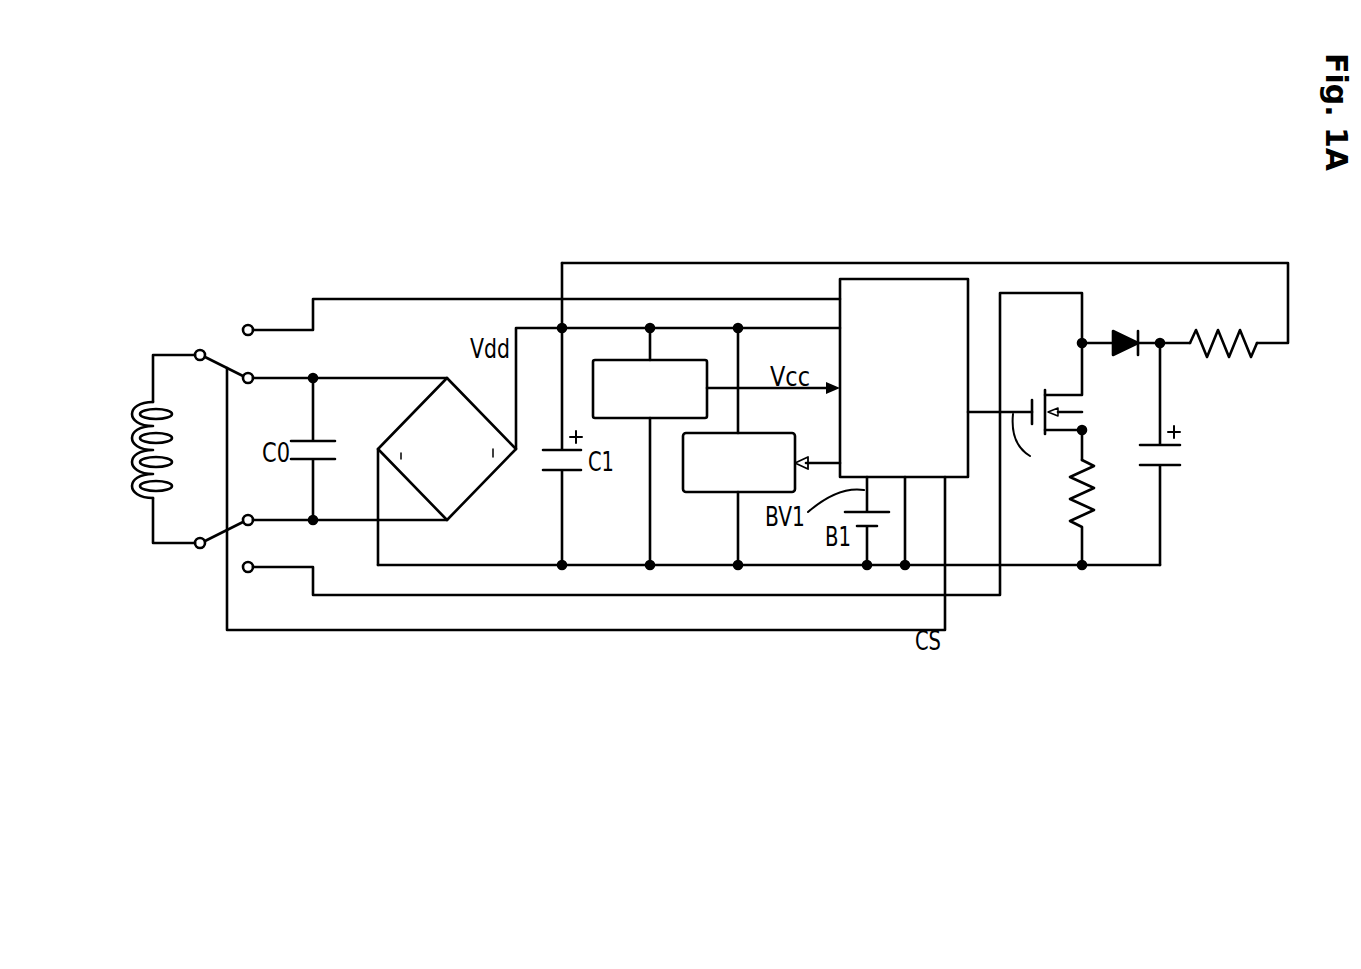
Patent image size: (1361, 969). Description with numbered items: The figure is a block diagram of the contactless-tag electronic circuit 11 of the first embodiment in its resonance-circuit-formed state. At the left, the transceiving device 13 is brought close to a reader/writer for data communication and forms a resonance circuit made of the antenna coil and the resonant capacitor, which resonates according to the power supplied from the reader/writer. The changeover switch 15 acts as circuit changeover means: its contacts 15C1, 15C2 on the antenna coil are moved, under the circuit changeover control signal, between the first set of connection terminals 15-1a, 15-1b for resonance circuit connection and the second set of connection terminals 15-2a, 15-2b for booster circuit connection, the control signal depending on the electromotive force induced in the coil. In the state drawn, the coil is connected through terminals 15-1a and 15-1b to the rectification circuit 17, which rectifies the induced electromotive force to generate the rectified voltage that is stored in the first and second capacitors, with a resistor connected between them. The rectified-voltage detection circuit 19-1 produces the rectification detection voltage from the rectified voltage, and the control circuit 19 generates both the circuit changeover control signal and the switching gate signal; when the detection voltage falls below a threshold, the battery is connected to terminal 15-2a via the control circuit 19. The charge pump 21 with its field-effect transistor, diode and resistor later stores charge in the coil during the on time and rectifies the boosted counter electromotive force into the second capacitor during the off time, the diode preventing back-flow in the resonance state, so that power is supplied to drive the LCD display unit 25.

The contactless-tag electronic circuit 11 is at (1092, 583).
The transceiving device 13 is at (112, 430).
The changeover switch 15 is at (594, 425).
The contact 15C1 is at (197, 351).
The contact 15C2 is at (198, 548).
The first connection terminal 15-1a is at (248, 384).
The first connection terminal 15-1b is at (250, 514).
The second connection terminal 15-2a is at (249, 325).
The second connection terminal 15-2b is at (253, 565).
The rectification circuit 17 is at (488, 473).
The control circuit 19 is at (916, 279).
The rectified-voltage detection circuit 19-1 is at (687, 360).
The FET charge pump 21 is at (1043, 338).
The LCD display unit 25 is at (712, 492).